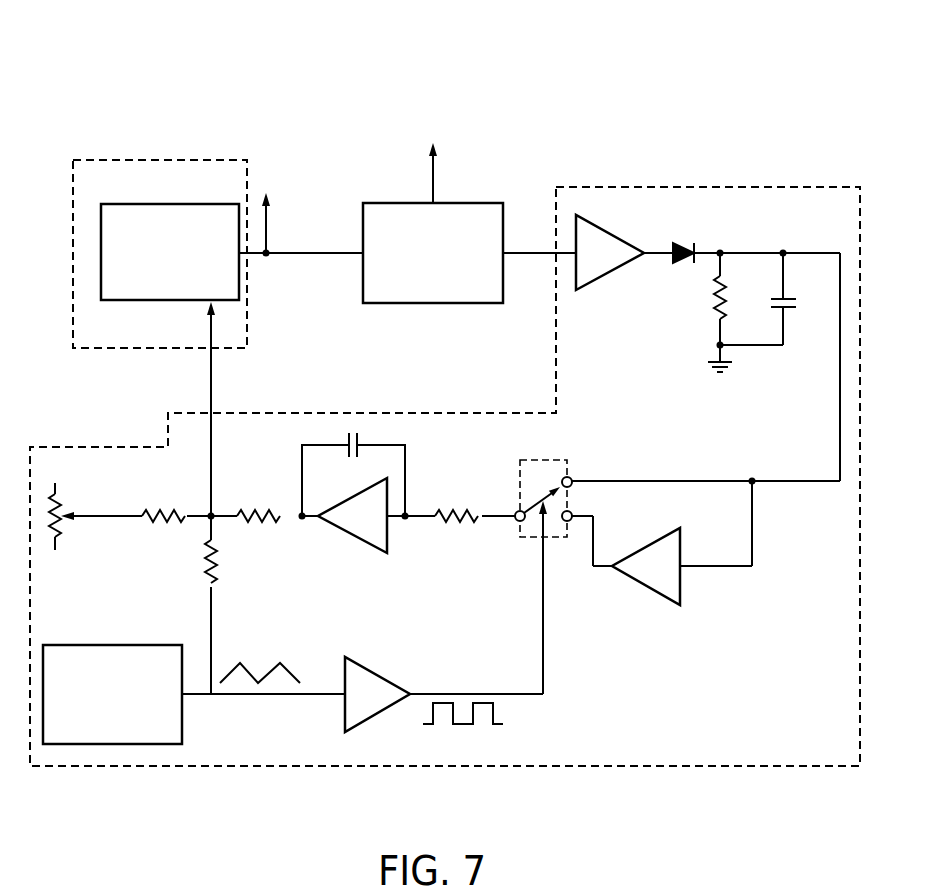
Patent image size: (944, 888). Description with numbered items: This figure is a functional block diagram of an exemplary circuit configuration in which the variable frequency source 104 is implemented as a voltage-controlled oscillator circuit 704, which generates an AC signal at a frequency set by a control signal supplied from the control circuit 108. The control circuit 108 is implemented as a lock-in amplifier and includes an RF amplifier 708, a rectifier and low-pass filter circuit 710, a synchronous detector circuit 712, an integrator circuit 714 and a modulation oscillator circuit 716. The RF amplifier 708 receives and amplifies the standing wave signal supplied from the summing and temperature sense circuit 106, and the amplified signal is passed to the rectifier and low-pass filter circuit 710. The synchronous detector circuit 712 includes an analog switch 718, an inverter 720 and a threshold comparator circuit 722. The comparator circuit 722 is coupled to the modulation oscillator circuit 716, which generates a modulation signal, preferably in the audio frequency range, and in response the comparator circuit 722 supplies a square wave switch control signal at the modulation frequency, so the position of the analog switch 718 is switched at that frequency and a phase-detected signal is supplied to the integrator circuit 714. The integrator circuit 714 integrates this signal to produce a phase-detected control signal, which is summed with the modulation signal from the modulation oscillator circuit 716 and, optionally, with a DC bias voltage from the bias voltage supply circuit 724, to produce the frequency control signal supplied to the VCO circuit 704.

The variable frequency source 104 is at (103, 58).
The voltage-controlled oscillator circuit 704 is at (207, 203).
The summing and temperature sense circuit 106 is at (400, 203).
The control circuit 108 is at (790, 187).
The RF amplifier 708 is at (612, 243).
The rectifier and low-pass filter circuit 710 is at (757, 282).
The synchronous detector circuit 712 is at (612, 453).
The integrator circuit 714 is at (280, 477).
The modulation oscillator circuit 716 is at (152, 645).
The analog switch 718 is at (546, 460).
The inverter 720 is at (654, 552).
The threshold comparator circuit 722 is at (378, 672).
The bias voltage supply circuit 724 is at (124, 472).